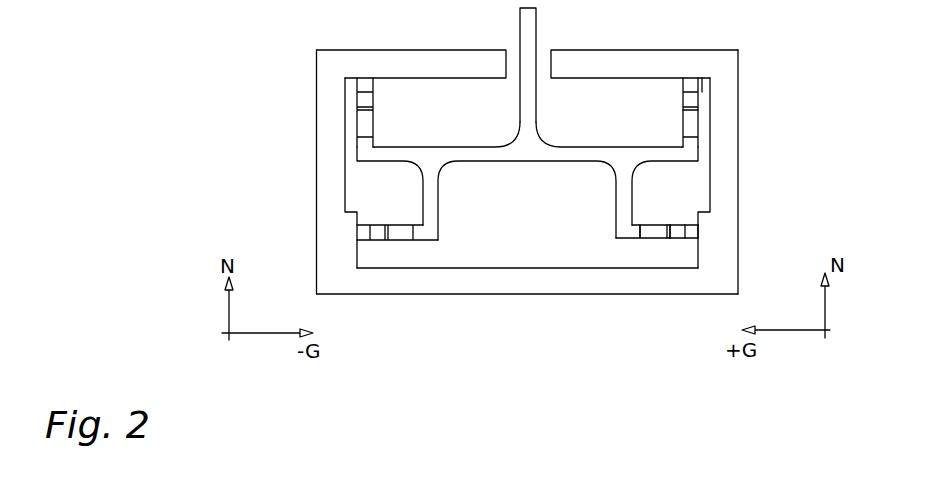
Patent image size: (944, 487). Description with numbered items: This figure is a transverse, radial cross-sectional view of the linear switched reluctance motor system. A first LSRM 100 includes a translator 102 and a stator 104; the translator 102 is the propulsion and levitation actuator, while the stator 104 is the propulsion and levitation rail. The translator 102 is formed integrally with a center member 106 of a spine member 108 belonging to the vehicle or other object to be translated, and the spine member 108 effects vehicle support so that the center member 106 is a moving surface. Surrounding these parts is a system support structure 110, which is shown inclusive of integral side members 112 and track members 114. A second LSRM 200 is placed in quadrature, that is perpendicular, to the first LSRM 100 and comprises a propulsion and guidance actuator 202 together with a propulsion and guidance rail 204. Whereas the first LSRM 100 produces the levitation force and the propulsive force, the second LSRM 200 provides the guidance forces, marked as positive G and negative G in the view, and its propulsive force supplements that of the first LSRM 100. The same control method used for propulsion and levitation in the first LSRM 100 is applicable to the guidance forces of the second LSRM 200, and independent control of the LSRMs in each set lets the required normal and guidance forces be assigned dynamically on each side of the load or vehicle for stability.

The first LSRM 100 is at (348, 110).
The translator 102 is at (700, 128).
The stator 104 is at (700, 92).
The center member 106 is at (630, 152).
The spine member 108 is at (535, 25).
The system support structure 110 is at (348, 50).
The side members 112 is at (738, 185).
The track members 114 is at (435, 295).
The second LSRM 200 is at (658, 243).
The propulsion and guidance actuator 202 is at (645, 240).
The propulsion and guidance rail 204 is at (698, 233).